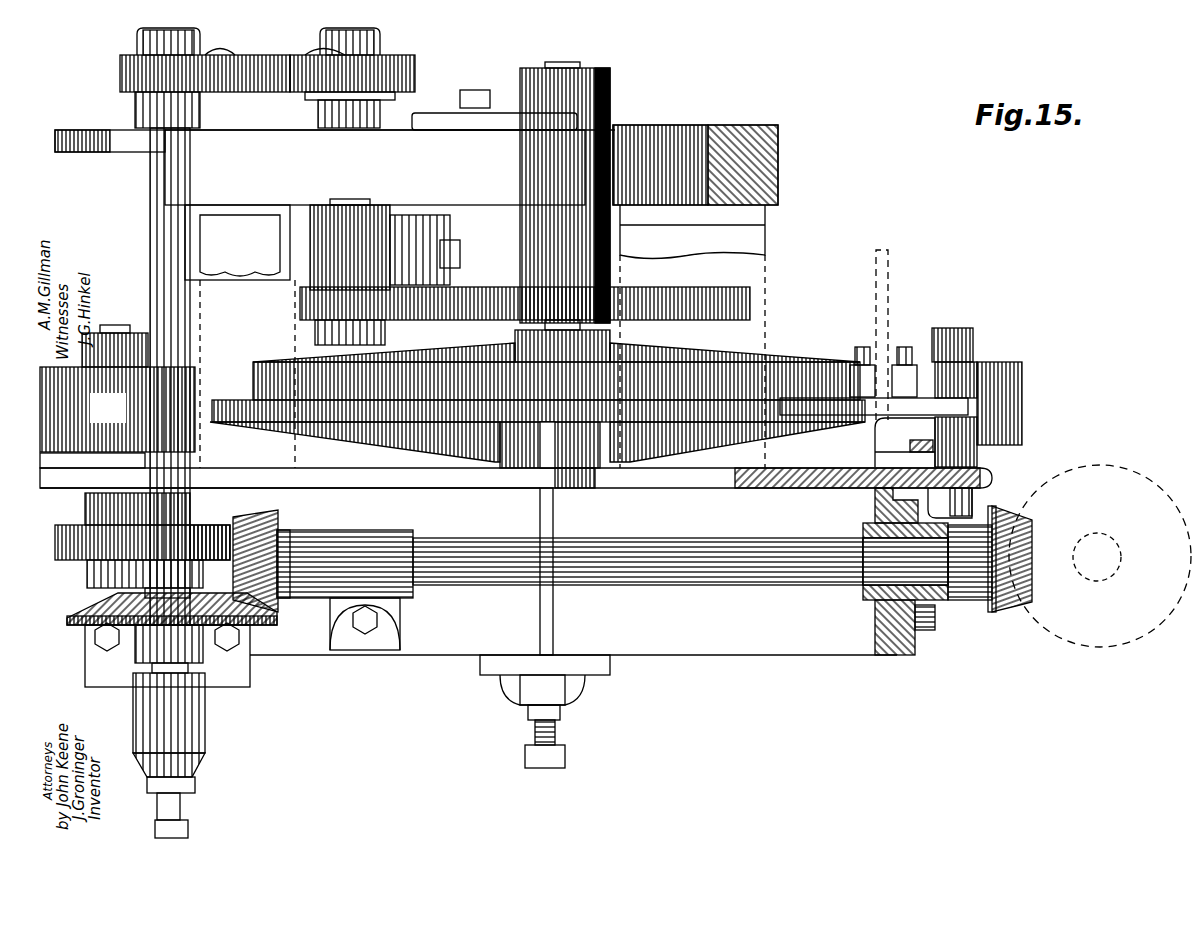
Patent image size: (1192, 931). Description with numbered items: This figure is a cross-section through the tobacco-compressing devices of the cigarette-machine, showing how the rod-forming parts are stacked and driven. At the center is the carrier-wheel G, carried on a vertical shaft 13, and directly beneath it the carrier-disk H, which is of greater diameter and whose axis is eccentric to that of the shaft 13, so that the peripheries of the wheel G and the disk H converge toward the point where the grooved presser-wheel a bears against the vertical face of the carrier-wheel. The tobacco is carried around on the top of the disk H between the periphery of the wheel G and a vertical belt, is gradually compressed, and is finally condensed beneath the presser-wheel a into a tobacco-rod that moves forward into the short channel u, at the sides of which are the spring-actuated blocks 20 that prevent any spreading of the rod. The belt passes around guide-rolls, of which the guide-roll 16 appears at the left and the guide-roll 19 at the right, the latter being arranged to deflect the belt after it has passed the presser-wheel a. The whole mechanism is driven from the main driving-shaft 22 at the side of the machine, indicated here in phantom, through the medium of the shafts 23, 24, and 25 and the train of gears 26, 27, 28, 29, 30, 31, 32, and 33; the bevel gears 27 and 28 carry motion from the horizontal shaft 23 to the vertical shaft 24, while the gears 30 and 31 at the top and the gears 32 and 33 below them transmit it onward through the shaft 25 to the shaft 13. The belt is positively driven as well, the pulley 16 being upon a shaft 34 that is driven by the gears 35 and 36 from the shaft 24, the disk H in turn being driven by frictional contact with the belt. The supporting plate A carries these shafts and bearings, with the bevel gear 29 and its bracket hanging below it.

The shaft 13 is at (575, 68).
The gear 30 is at (120, 78).
The gear 31 is at (415, 72).
The shaft 24 is at (150, 268).
The shaft 25 is at (355, 205).
The gear 32 is at (300, 312).
The gear 33 is at (750, 305).
The carrier-wheel G is at (556, 360).
The carrier-disk H is at (355, 420).
The base plate A is at (722, 478).
The shaft 23 is at (680, 576).
The gear 28 is at (283, 530).
The shaft 34 is at (115, 334).
The guide-roll 16 is at (117, 409).
The gear 35 is at (60, 528).
The gear 36 is at (218, 518).
The gear 29 is at (80, 608).
The guide-roll 19 is at (993, 397).
The spring-actuated block 20 is at (860, 372).
The presser-wheel a is at (889, 320).
The channel u is at (882, 390).
The gear 27 is at (1010, 612).
The gear 26 is at (1158, 490).
The main driving-shaft 22 is at (1100, 555).